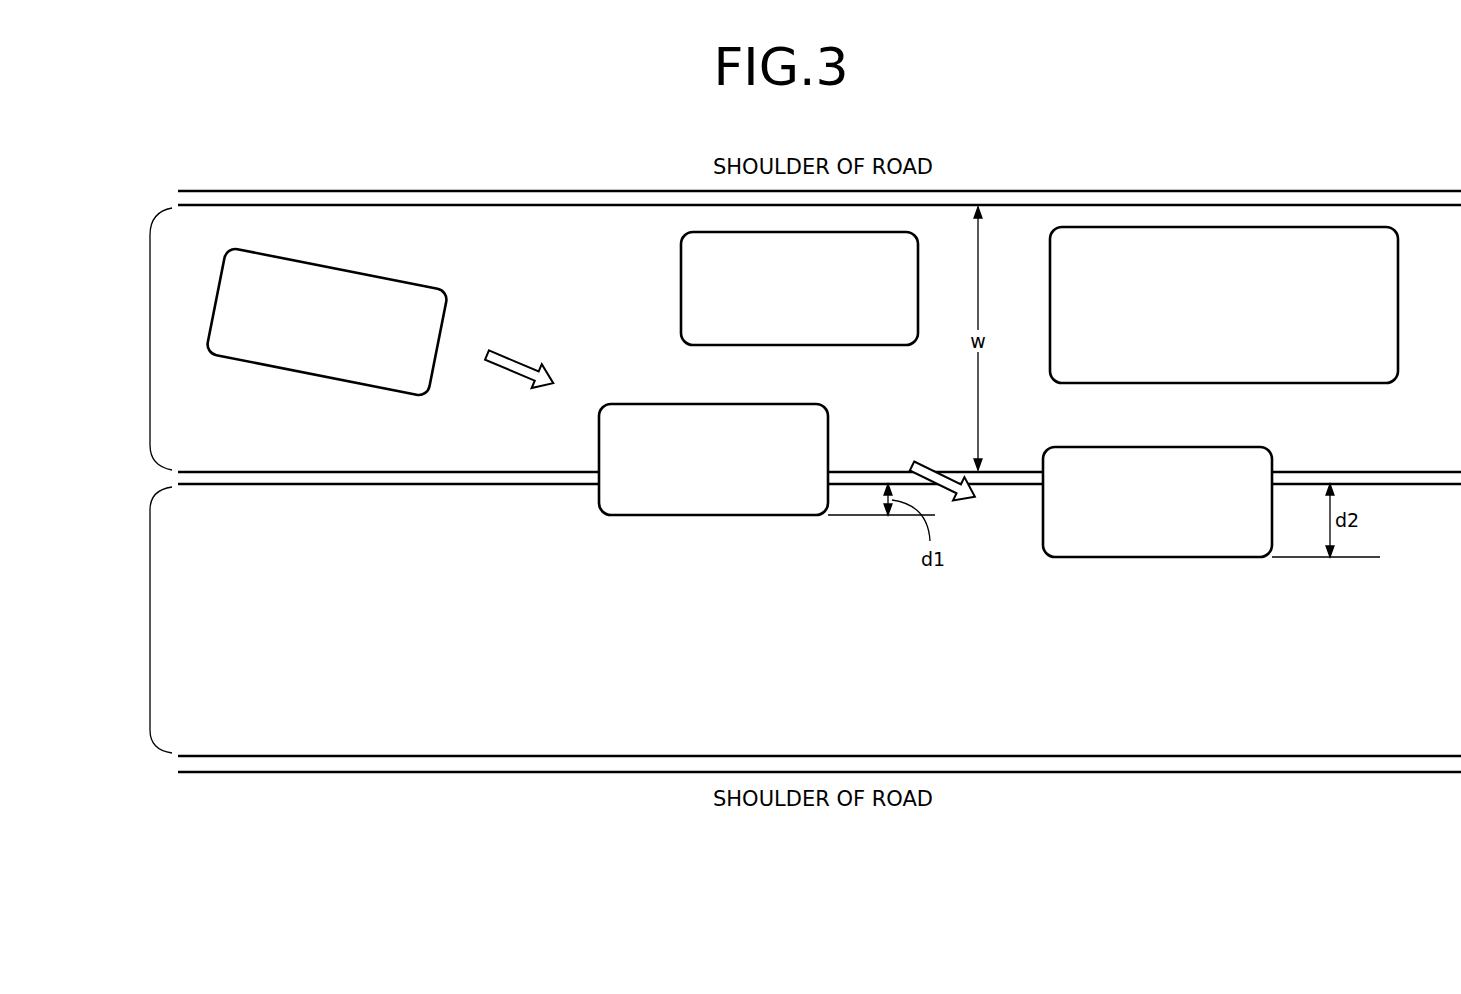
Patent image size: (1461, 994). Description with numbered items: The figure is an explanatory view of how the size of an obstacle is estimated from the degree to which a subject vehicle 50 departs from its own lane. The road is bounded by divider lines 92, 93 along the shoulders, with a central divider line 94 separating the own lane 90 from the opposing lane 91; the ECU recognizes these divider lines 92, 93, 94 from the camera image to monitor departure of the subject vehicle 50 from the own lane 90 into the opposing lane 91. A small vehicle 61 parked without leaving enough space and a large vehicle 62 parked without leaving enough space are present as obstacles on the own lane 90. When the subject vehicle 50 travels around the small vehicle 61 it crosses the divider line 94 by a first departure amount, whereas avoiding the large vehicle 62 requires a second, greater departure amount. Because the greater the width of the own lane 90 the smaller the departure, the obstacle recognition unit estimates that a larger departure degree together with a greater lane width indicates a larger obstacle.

The subject vehicle 50 is at (362, 269).
The small vehicle parked without leaving enough space 61 is at (681, 286).
The large vehicle parked without leaving enough space 62 is at (1398, 300).
The own lane 90 is at (150, 338).
The opposing lane 91 is at (150, 620).
The divider line 92 is at (467, 190).
The divider line 93 is at (467, 773).
The divider line 94 is at (417, 486).